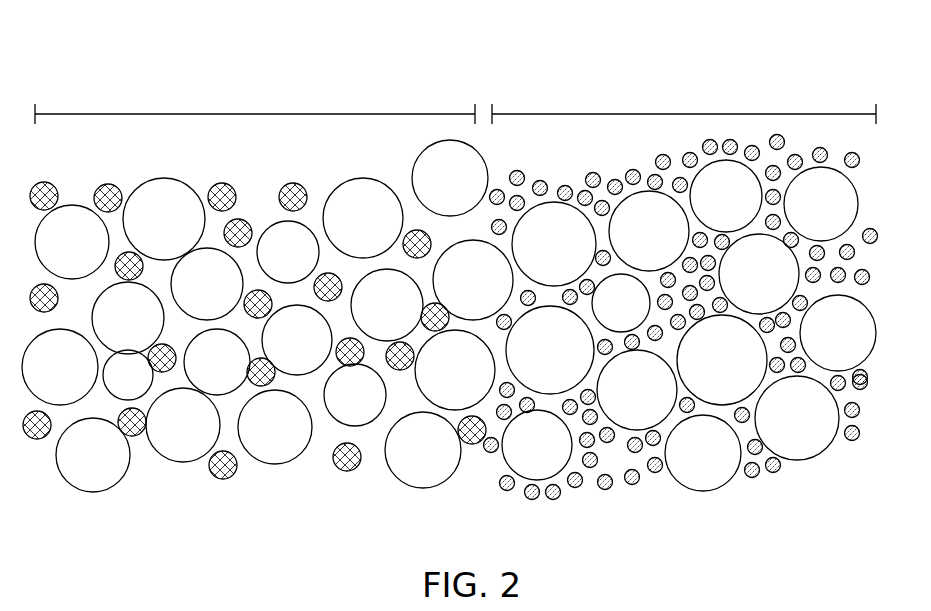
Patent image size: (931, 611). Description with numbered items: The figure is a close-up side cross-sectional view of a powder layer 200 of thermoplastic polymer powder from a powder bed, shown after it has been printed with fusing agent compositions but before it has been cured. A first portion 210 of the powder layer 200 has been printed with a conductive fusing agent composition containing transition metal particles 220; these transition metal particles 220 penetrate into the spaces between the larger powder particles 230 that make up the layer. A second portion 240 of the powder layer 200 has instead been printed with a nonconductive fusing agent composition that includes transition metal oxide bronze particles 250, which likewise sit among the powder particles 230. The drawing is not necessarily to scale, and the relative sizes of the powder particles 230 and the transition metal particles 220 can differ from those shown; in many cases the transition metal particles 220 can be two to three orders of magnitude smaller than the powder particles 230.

The powder layer 200 is at (155, 40).
The first portion 210 is at (676, 114).
The transition metal particles 220 is at (777, 471).
The powder particles 230 is at (703, 472).
The second portion 240 is at (258, 114).
The transition metal oxide bronze particles 250 is at (229, 470).